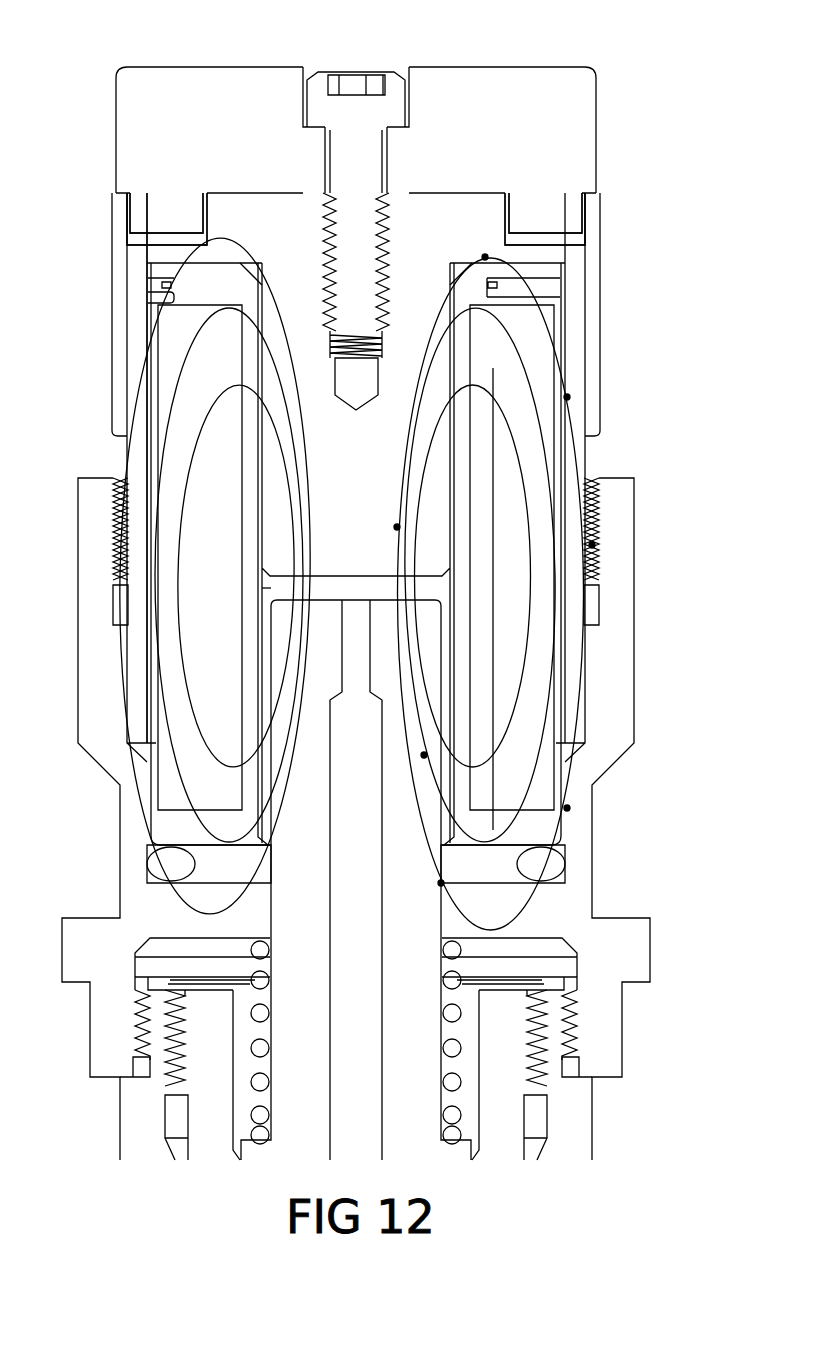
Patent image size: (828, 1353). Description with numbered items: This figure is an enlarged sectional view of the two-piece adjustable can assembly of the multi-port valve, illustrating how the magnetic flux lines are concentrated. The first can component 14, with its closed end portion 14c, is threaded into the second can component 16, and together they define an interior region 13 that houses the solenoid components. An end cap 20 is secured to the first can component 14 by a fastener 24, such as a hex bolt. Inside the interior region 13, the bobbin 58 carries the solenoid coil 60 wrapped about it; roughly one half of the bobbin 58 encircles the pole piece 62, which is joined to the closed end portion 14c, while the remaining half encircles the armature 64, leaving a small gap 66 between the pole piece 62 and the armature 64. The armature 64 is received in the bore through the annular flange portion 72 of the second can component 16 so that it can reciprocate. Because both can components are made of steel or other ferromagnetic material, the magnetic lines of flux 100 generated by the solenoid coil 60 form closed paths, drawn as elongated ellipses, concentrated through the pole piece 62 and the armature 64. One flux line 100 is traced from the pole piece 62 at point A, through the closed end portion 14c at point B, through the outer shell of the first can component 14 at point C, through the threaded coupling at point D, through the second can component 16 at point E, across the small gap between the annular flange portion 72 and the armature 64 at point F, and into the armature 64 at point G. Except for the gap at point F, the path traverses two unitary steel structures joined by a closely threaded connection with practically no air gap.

The end cap 20 is at (575, 110).
The fastener 24 is at (358, 67).
The closed end portion 14c is at (445, 203).
The first can component 14 is at (596, 297).
The interior region 13 is at (150, 391).
The second can component 16 is at (603, 677).
The solenoid coil 60 is at (175, 326).
The bobbin 58 is at (170, 292).
The pole piece 62 is at (287, 540).
The armature 64 is at (285, 618).
The gap 66 is at (250, 587).
The annular flange portion 72 is at (548, 905).
The magnetic lines of flux 100 is at (308, 407).
The point A is at (397, 527).
The point B is at (485, 257).
The point C is at (567, 397).
The point D is at (592, 545).
The point E is at (567, 808).
The point F is at (441, 883).
The point G is at (424, 755).